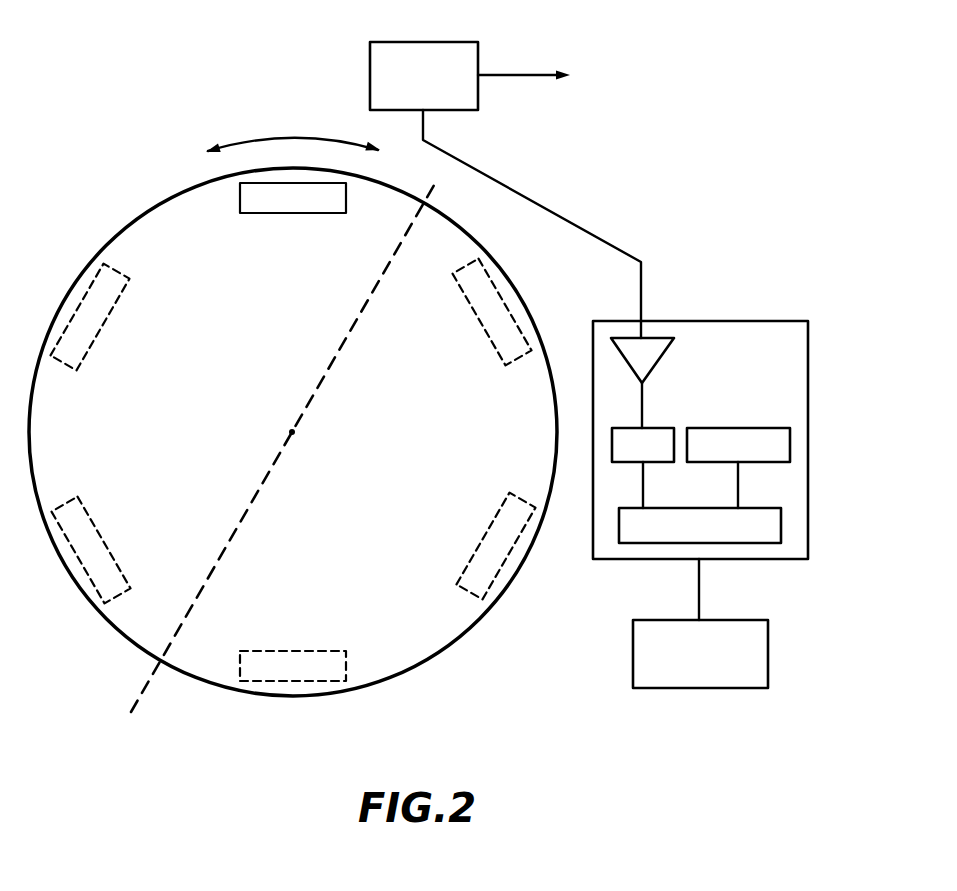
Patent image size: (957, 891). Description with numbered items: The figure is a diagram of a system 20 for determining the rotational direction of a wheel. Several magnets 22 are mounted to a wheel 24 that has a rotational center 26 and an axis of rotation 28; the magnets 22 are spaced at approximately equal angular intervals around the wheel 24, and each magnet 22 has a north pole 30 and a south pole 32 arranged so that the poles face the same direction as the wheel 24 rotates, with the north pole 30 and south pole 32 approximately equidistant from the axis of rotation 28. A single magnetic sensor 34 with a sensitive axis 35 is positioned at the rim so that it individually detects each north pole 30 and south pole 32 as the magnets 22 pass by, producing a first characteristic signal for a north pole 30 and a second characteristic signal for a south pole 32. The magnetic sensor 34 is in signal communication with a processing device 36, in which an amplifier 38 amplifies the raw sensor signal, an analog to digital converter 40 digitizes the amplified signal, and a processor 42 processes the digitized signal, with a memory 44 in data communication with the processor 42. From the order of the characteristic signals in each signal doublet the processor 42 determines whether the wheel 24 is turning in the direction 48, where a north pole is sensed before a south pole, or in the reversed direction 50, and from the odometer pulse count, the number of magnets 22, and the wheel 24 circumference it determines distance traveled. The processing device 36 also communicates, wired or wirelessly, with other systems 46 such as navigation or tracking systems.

The system 20 is at (112, 100).
The magnet 22 is at (296, 214).
The wheel 24 is at (520, 292).
The rotational center 26 is at (294, 433).
The axis of rotation 28 is at (436, 180).
The north pole 30 is at (346, 198).
The south pole 32 is at (240, 198).
The magnetic sensor 34 is at (406, 42).
The sensitive axis 35 is at (518, 74).
The processing device 36 is at (760, 321).
The amplifier 38 is at (660, 364).
The analog to digital converter 40 is at (657, 428).
The processor 42 is at (755, 508).
The memory 44 is at (754, 428).
The other systems 46 is at (698, 688).
The direction 48 is at (354, 147).
The direction 50 is at (234, 146).